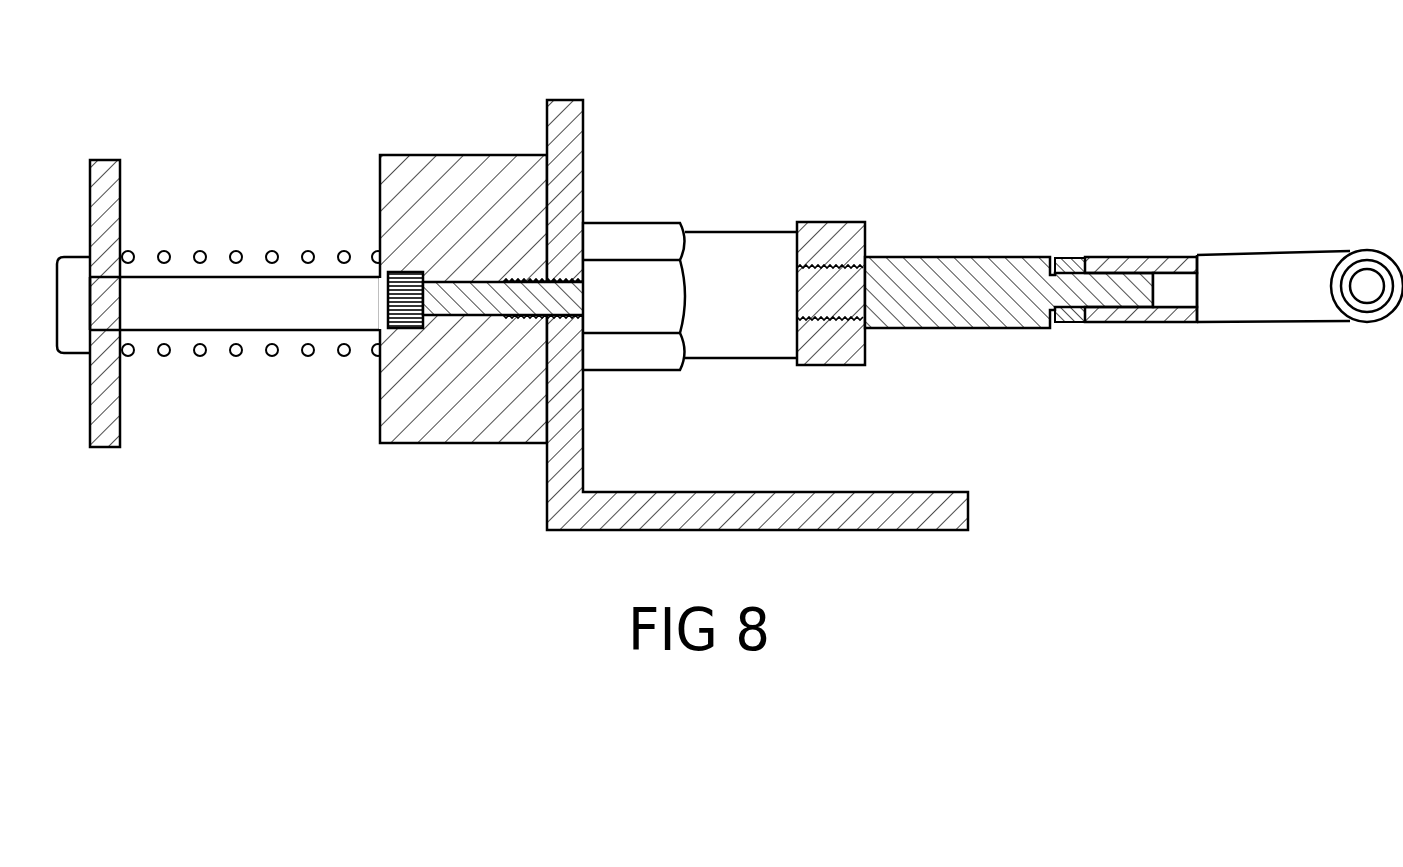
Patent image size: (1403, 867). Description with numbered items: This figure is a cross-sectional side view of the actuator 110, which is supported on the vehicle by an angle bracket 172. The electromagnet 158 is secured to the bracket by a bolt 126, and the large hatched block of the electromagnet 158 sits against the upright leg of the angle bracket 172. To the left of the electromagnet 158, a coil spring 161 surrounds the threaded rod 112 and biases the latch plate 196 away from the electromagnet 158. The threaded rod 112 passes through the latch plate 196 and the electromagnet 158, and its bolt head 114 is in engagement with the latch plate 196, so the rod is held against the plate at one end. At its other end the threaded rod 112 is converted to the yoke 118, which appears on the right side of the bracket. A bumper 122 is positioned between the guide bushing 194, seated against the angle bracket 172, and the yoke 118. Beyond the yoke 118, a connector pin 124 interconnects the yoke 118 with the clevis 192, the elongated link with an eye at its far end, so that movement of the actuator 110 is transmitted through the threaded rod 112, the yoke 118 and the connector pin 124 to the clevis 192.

The actuator 110 is at (645, 102).
The threaded rod 112 is at (262, 318).
The bolt head 114 is at (73, 347).
The yoke 118 is at (843, 237).
The bumper 122 is at (730, 348).
The connector pin 124 is at (970, 303).
The bolt 126 is at (460, 300).
The electromagnet 158 is at (453, 177).
The coil spring 161 is at (228, 253).
The angle bracket 172 is at (565, 462).
The clevis 192 is at (1294, 298).
The guide bushing 194 is at (608, 243).
The latch plate 196 is at (97, 202).